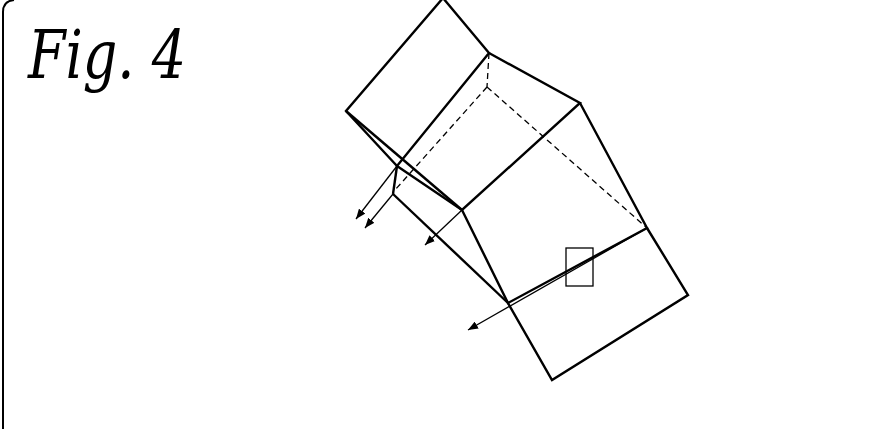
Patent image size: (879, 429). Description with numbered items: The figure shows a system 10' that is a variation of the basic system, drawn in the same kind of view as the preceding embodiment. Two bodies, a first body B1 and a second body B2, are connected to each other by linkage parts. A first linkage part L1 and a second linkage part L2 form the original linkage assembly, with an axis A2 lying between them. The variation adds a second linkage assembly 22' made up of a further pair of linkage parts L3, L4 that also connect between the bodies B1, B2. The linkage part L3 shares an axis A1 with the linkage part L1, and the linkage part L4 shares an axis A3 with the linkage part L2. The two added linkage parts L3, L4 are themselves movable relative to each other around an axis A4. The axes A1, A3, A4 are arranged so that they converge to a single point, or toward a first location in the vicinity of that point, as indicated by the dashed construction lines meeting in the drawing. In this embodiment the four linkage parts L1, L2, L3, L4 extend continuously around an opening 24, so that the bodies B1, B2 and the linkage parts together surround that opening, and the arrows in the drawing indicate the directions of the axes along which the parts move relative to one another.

The system 10' is at (717, 111).
The second linkage assembly 22' is at (367, 222).
The opening 24 is at (448, 232).
The first body B1 is at (578, 304).
The second body B2 is at (417, 83).
The first linkage part L1 is at (554, 203).
The second linkage part L2 is at (487, 131).
The linkage part L3 is at (471, 253).
The linkage part L4 is at (402, 177).
The axis A1 is at (583, 162).
The axis A2 is at (518, 164).
The axis A3 is at (503, 59).
The axis A4 is at (385, 204).